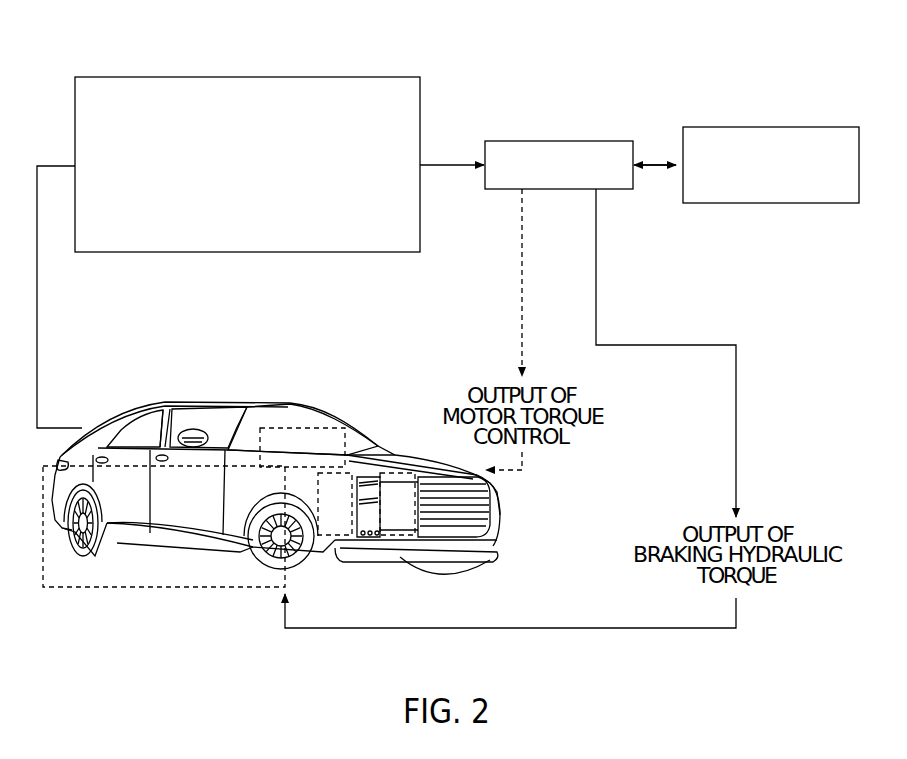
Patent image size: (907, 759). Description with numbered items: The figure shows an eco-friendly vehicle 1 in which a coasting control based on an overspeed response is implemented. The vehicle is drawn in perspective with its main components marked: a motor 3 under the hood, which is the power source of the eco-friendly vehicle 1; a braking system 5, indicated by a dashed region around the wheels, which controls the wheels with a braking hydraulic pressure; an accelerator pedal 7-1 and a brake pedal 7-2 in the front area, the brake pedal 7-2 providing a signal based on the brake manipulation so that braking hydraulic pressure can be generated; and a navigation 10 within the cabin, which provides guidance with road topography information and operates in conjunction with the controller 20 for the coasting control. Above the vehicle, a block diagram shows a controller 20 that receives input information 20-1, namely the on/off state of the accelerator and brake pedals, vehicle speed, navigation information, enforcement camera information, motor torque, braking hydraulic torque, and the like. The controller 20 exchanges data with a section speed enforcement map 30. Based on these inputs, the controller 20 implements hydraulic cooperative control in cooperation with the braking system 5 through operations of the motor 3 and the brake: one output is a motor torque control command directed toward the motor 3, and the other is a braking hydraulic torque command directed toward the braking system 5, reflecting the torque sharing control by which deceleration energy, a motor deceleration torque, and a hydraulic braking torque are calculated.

The eco-friendly vehicle 1 is at (132, 410).
The motor 3 is at (400, 453).
The braking system 5 is at (153, 590).
The accelerator pedal 7-1 is at (340, 518).
The brake pedal 7-2 is at (395, 520).
The navigation 10 is at (310, 447).
The controller 20 is at (558, 141).
The input information 20-1 is at (245, 77).
The section speed enforcement map 30 is at (770, 127).